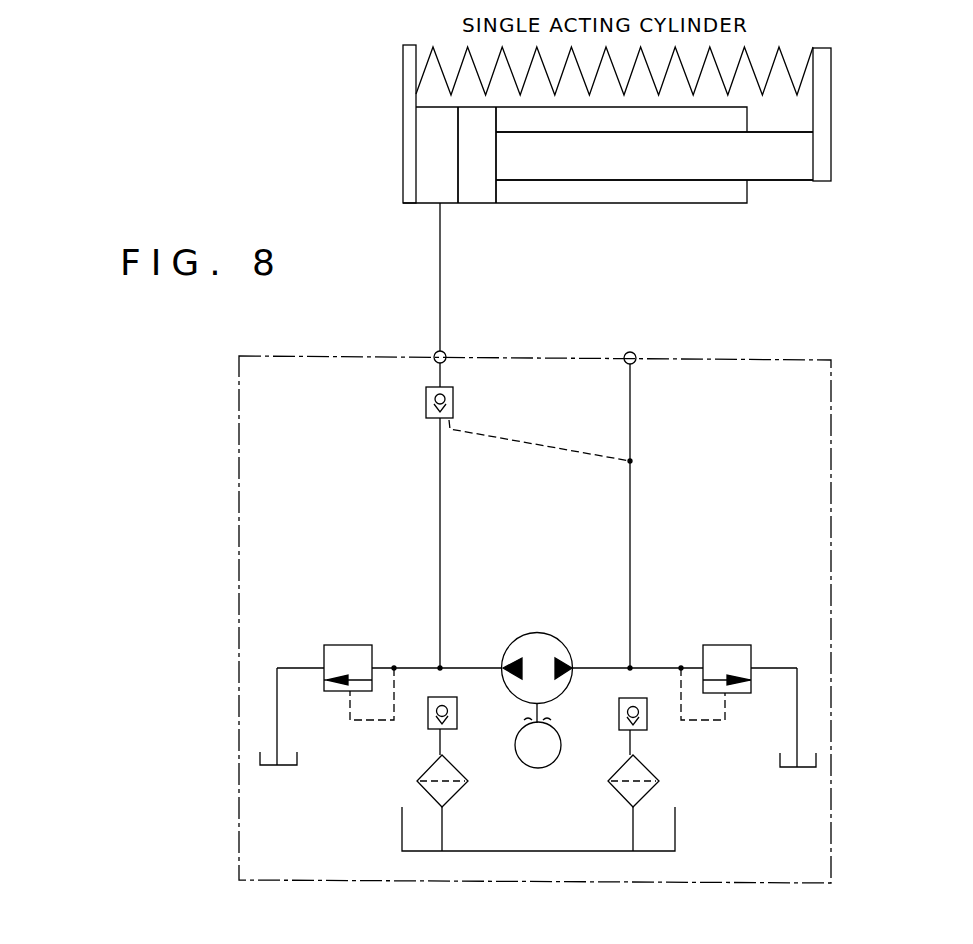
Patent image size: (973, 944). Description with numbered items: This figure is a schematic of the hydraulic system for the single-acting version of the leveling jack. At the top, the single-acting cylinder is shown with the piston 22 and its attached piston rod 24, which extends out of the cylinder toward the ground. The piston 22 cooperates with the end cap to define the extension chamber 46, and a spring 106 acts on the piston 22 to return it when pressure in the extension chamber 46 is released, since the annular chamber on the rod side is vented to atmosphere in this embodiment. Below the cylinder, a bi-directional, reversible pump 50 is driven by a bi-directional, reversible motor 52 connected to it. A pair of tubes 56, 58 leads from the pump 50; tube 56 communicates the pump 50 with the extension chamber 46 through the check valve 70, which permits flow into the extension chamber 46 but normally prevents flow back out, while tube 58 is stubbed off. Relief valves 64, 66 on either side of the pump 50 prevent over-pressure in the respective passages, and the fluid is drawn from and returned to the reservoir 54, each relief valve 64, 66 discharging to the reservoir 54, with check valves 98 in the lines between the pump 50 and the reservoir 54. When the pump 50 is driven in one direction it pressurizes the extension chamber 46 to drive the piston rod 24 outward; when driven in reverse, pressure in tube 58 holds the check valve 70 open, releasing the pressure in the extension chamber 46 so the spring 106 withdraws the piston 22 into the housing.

The spring 106 is at (765, 88).
The piston 22 is at (482, 188).
The piston rod 24 is at (630, 157).
The extension chamber 46 is at (441, 178).
The tube 56 is at (440, 529).
The tube 58 is at (633, 558).
The check valve 70 is at (450, 398).
The bi-directional reversible pump 50 is at (543, 640).
The bi-directional reversible motor 52 is at (558, 760).
The relief valve 64 is at (340, 683).
The relief valve 66 is at (738, 658).
The reservoir 54 is at (285, 767).
The check valve 98 is at (437, 727).